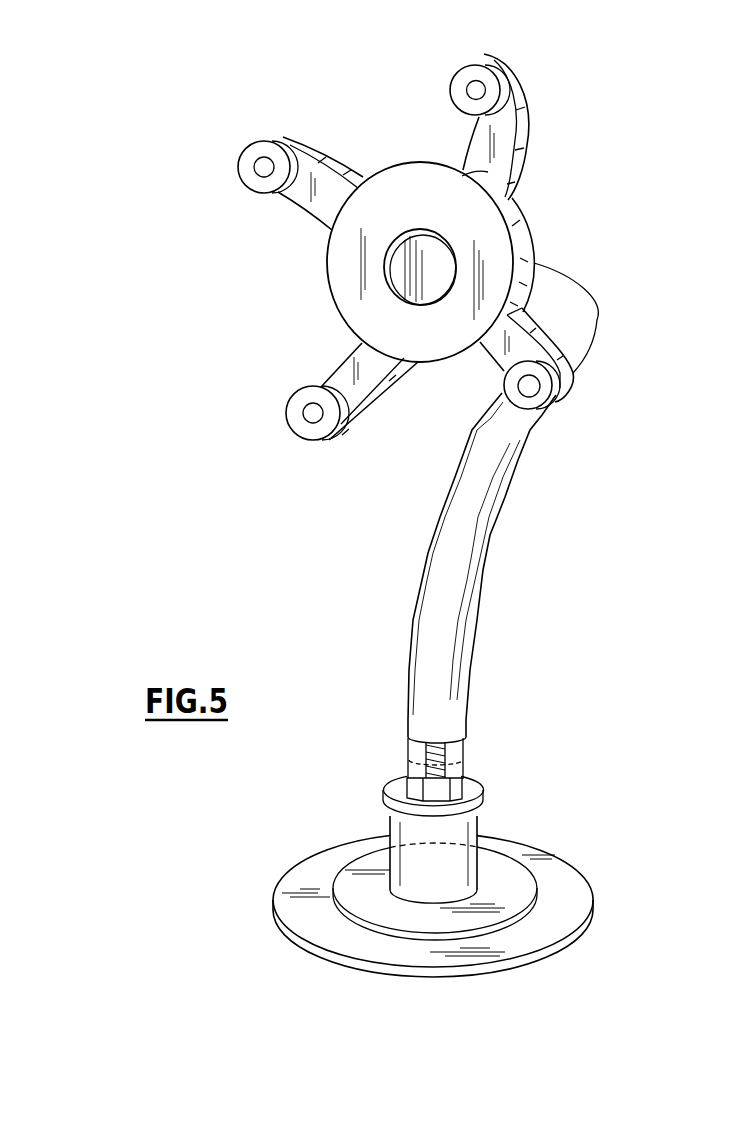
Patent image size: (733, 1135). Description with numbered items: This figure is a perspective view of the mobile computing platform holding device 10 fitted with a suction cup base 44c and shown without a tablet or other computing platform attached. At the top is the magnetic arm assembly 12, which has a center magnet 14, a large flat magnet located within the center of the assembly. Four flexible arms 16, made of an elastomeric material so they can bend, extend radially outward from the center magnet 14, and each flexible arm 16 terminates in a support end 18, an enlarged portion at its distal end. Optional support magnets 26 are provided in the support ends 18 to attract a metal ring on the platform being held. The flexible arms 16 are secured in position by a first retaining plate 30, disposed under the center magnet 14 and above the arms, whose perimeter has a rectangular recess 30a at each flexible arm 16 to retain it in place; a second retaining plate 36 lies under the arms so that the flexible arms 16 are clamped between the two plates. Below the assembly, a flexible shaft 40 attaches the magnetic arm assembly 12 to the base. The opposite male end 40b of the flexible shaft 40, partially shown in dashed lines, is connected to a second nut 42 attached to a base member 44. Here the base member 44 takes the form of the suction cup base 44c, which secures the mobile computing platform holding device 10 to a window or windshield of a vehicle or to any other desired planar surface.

The mobile computing platform holding device 10 is at (108, 62).
The magnetic arm assembly 12 is at (273, 309).
The center magnet 14 is at (397, 263).
The flexible arms 16 is at (323, 183).
The support end 18 is at (267, 148).
The support magnets 26 is at (262, 160).
The first retaining plate 30 is at (490, 290).
The rectangular recess 30a is at (509, 200).
The second retaining plate 36 is at (533, 238).
The flexible shaft 40 is at (453, 576).
The male end 40b is at (460, 753).
The second nut 42 is at (410, 790).
The base member 44 is at (476, 791).
The suction cup base 44c is at (565, 897).